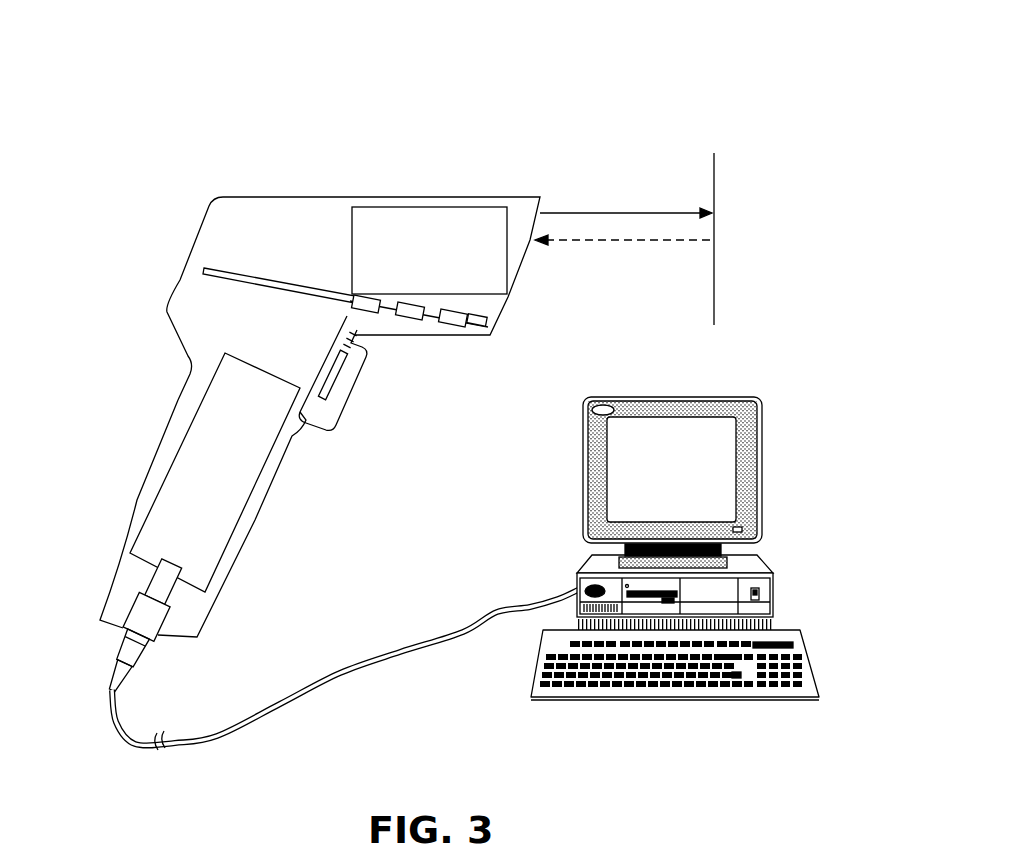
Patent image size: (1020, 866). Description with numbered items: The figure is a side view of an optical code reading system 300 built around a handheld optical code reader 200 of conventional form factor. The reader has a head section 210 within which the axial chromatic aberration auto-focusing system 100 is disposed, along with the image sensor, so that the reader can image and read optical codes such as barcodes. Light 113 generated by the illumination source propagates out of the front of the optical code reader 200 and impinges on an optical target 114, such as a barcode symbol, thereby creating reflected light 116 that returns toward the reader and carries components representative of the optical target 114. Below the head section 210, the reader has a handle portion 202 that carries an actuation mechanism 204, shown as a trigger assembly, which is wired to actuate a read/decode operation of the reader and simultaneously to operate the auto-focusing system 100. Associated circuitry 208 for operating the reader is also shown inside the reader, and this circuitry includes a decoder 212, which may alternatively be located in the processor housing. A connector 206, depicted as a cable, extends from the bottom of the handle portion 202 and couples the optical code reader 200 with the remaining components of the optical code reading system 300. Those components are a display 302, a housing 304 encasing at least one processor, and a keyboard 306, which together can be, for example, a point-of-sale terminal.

The optical code reading system 300 is at (407, 56).
The optical code reader 200 is at (440, 177).
The head section 210 is at (287, 197).
The axial chromatic aberration auto-focusing system 100 is at (413, 258).
The associated circuitry 208 is at (249, 275).
The decoder 212 is at (449, 326).
The handle portion 202 is at (148, 474).
The actuation mechanism 204 is at (337, 398).
The connector 206 is at (133, 673).
The light 113 is at (611, 213).
The optical target 114 is at (714, 192).
The reflected light 116 is at (621, 240).
The display 302 is at (762, 437).
The housing 304 is at (778, 600).
The keyboard 306 is at (817, 650).